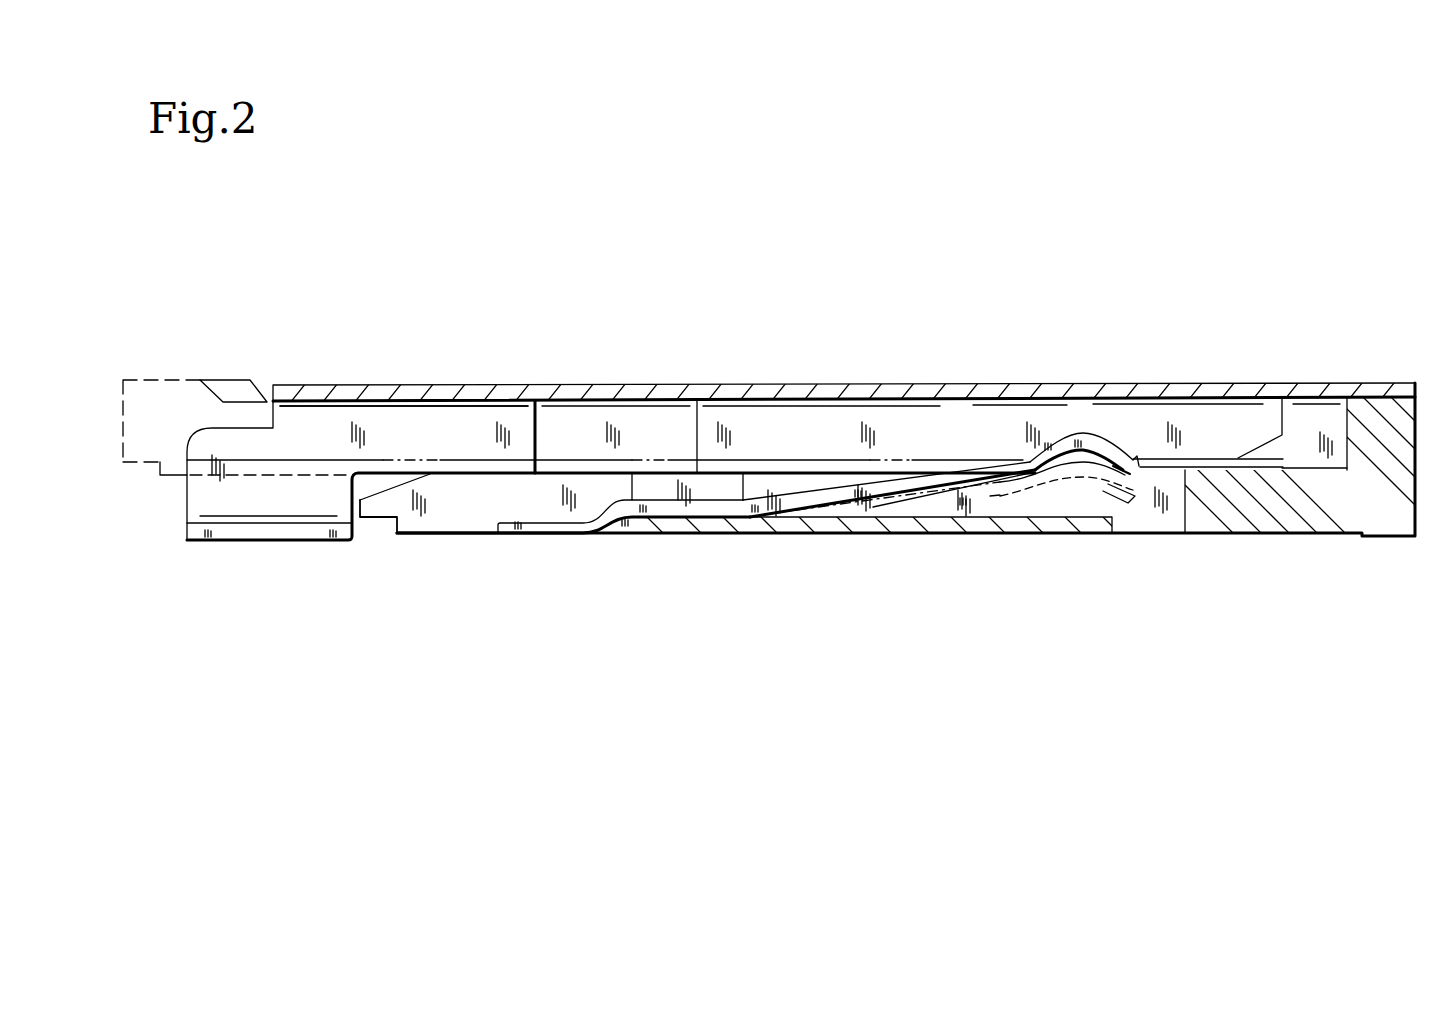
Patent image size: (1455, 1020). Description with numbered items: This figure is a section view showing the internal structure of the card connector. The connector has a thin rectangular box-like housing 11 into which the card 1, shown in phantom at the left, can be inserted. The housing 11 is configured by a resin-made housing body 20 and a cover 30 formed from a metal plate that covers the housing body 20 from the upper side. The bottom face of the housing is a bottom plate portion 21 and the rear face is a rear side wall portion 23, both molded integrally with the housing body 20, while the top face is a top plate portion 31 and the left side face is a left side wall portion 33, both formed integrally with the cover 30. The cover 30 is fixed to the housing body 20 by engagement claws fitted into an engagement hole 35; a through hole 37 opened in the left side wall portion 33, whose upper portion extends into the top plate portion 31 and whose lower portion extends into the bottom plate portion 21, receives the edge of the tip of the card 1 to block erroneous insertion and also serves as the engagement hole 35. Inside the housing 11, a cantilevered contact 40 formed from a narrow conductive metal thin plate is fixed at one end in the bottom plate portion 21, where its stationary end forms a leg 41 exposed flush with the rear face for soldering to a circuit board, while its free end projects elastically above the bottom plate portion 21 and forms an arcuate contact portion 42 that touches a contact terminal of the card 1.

The card 1 is at (151, 380).
The housing 11 is at (870, 340).
The housing body 20 is at (1328, 537).
The bottom plate portion 21 is at (1218, 515).
The rear side wall portion 23 is at (1407, 430).
The cover 30 is at (1311, 362).
The top plate portion 31 is at (1143, 387).
The left side wall portion 33 is at (758, 415).
The engagement hole 35 is at (451, 335).
The through hole 37 is at (603, 410).
The contact 40 is at (945, 478).
The leg 41 is at (551, 530).
The arcuate contact portion 42 is at (1078, 432).